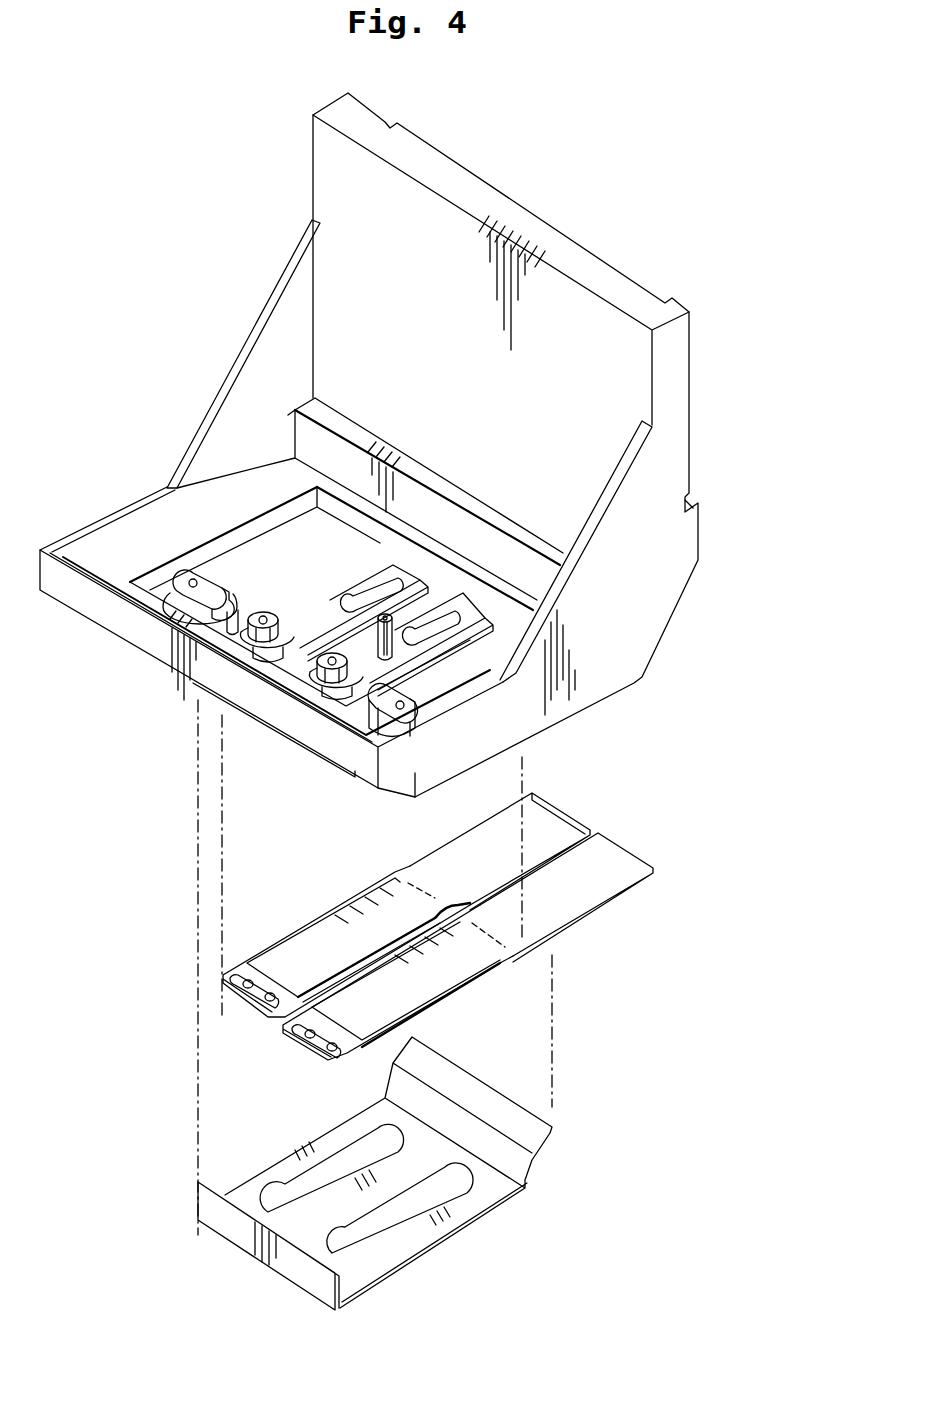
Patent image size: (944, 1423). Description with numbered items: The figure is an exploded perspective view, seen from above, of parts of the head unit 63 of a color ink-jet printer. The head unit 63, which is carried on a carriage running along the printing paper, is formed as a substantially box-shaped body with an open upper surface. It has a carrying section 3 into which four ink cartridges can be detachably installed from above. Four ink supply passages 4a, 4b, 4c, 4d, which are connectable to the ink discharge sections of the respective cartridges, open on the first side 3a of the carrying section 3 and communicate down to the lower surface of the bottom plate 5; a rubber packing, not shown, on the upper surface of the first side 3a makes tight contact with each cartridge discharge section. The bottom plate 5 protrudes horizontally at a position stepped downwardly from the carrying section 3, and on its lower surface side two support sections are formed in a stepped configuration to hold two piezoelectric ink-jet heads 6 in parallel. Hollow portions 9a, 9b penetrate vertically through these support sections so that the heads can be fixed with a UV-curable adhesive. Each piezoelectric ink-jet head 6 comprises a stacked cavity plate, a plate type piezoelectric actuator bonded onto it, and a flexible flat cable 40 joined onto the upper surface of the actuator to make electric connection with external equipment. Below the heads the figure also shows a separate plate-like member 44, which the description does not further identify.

The carrying section 3 is at (218, 422).
The first side of the carrying section 3a is at (205, 562).
The ink supply passage 4a is at (190, 585).
The ink supply passage 4b is at (260, 622).
The ink supply passage 4c is at (312, 670).
The ink supply passage 4d is at (393, 705).
The bottom plate 5 is at (320, 763).
The piezoelectric ink-jet head 6 is at (292, 1054).
The hollow portion 9a is at (437, 620).
The hollow portion 9b is at (385, 595).
The flexible flat cable 40 is at (548, 817).
The cover plate 44 is at (390, 1253).
The head unit 63 is at (245, 322).